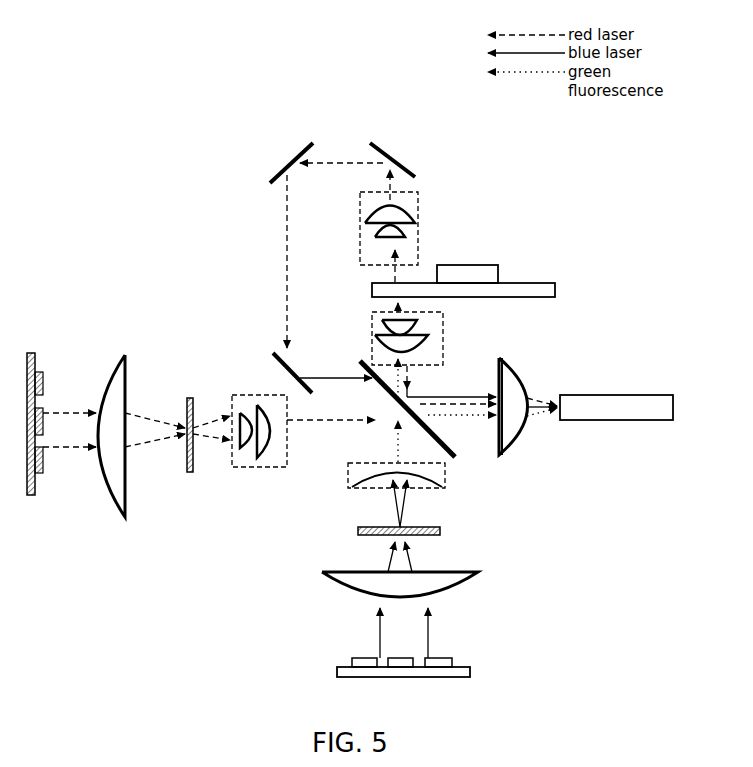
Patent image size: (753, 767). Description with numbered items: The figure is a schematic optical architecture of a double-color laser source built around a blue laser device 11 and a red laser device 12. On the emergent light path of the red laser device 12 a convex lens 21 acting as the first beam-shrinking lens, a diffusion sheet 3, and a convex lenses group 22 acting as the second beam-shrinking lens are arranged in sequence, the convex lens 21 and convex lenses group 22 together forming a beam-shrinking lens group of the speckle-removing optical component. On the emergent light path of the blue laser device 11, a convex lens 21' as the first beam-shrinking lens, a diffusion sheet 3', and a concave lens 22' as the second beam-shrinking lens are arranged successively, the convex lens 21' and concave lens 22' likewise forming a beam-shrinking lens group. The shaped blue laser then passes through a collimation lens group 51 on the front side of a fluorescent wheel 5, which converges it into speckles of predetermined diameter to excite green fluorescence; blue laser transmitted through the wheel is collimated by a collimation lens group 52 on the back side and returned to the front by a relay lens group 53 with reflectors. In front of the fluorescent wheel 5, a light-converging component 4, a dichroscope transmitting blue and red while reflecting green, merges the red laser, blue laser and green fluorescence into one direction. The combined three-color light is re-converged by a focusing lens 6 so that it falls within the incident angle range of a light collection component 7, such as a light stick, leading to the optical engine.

The blue laser device 11 is at (470, 658).
The red laser device 12 is at (33, 505).
The convex lens 21 is at (132, 397).
The convex lens 21' is at (366, 597).
The convex lenses group 22 is at (244, 467).
The concave lens 22' is at (365, 495).
The diffusion sheet 3 is at (209, 397).
The diffusion sheet 3' is at (444, 536).
The light-converging component 4 is at (458, 460).
The fluorescent wheel 5 is at (558, 272).
The collimation lens group 51 is at (442, 341).
The collimation lens group 52 is at (418, 222).
The relay lens group 53 is at (273, 353).
The focusing lens 6 is at (521, 376).
The light collection component 7 is at (615, 391).